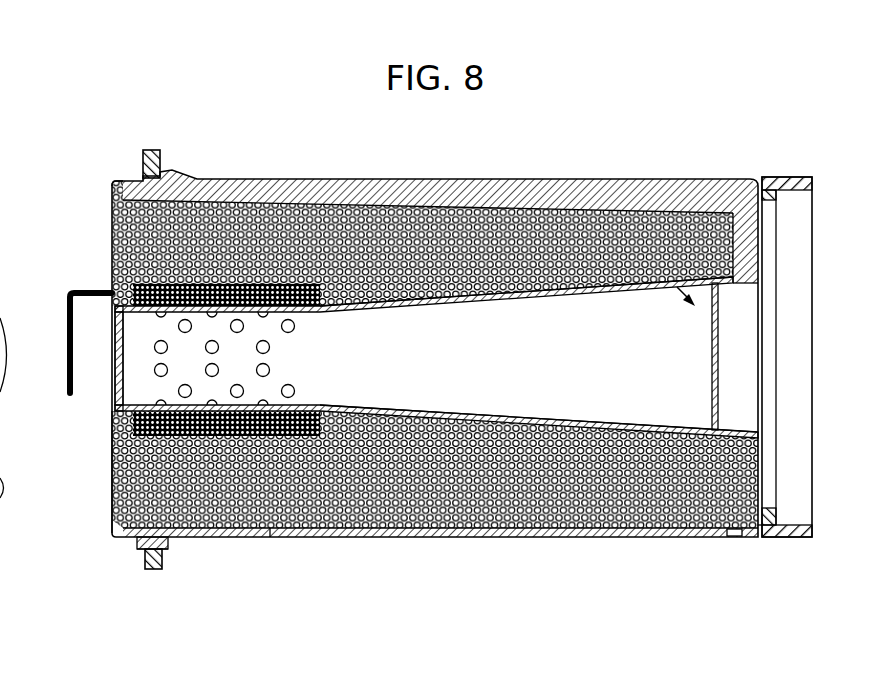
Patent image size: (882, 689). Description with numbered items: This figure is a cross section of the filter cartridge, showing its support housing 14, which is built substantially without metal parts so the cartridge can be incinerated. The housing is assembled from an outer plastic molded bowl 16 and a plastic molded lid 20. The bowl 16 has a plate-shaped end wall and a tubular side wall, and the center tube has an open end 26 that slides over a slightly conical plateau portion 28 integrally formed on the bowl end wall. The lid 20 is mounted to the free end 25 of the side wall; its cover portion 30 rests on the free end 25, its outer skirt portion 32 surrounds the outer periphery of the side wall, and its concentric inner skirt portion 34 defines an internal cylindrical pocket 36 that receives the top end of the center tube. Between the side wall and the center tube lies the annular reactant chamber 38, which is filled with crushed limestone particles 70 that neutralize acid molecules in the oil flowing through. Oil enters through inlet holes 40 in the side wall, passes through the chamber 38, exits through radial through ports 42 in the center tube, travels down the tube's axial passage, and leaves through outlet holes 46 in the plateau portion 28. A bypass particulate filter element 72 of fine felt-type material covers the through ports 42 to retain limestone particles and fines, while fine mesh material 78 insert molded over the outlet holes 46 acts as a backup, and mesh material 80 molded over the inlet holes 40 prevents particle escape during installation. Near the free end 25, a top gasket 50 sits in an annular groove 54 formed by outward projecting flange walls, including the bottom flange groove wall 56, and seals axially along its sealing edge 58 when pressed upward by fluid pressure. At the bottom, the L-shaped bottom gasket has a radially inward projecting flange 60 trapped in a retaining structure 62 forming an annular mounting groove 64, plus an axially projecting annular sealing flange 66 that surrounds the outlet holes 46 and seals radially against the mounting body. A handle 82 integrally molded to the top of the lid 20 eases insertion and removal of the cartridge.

The support housing 14 is at (386, 550).
The outer plastic molded bowl 16 is at (328, 550).
The plastic molded lid 20 is at (98, 220).
The free end 25 is at (121, 178).
The open end 26 is at (625, 178).
The plateau portion 28 is at (735, 430).
The cover portion 30 is at (113, 458).
The outer skirt portion 32 is at (135, 541).
The inner skirt portion 34 is at (113, 423).
The internal cylindrical pocket 36 is at (113, 360).
The annular reactant chamber 38 is at (446, 538).
The inlet holes 40 is at (735, 538).
The radial through ports 42 is at (235, 182).
The outlet holes 46 is at (720, 323).
The top gasket 50 is at (152, 580).
The annular groove 54 is at (115, 503).
The bottom flange groove wall 56 is at (143, 552).
The sealing edge 58 is at (155, 148).
The radially inward projecting flange 60 is at (768, 540).
The retaining structure 62 is at (775, 522).
The annular mounting groove 64 is at (766, 200).
The axially projecting annular sealing flange 66 is at (800, 177).
The crushed limestone particles 70 is at (330, 182).
The bypass particulate filter element 72 is at (275, 538).
The fine mesh material 78 is at (706, 356).
The mesh material 80 is at (758, 472).
The handle 82 is at (75, 292).